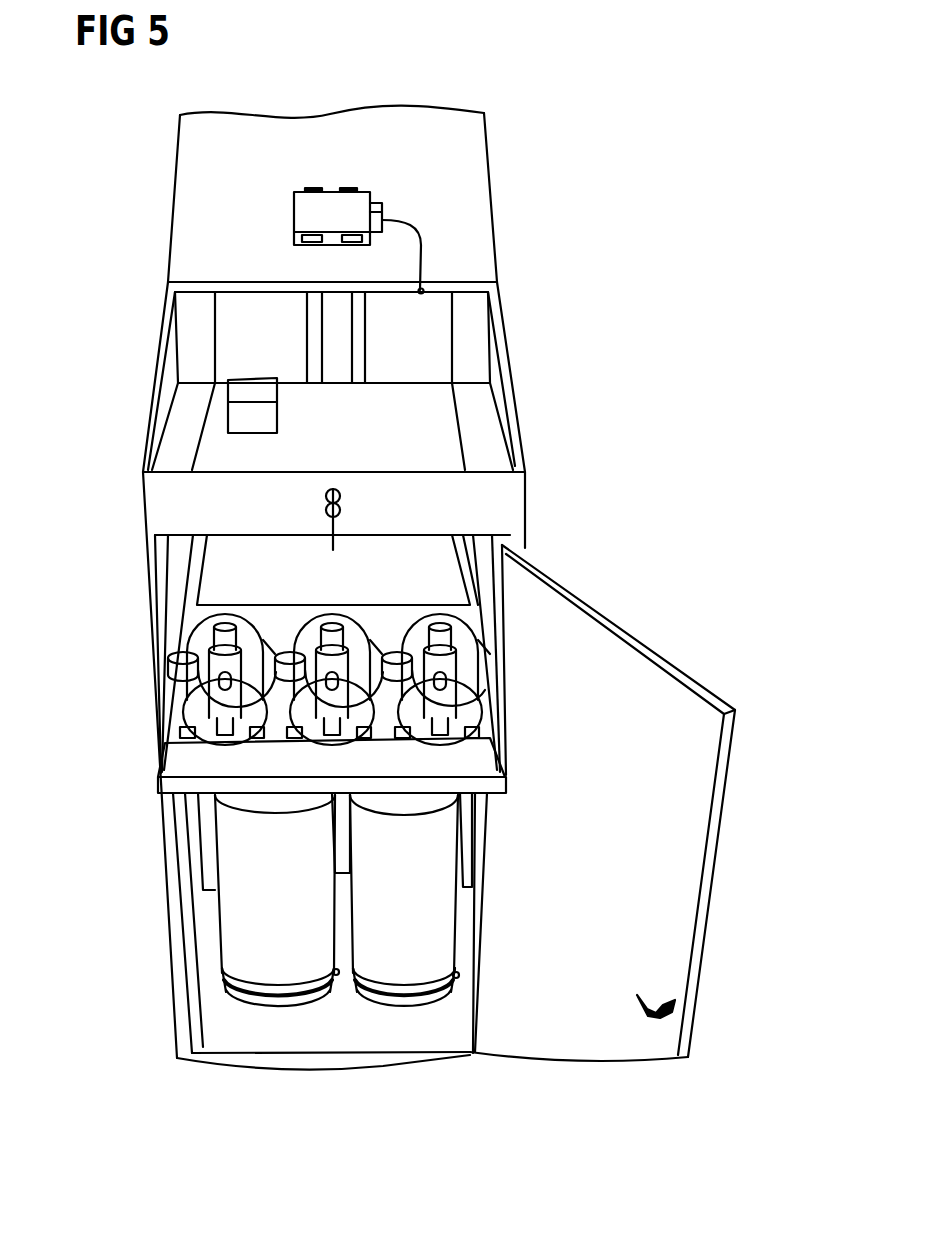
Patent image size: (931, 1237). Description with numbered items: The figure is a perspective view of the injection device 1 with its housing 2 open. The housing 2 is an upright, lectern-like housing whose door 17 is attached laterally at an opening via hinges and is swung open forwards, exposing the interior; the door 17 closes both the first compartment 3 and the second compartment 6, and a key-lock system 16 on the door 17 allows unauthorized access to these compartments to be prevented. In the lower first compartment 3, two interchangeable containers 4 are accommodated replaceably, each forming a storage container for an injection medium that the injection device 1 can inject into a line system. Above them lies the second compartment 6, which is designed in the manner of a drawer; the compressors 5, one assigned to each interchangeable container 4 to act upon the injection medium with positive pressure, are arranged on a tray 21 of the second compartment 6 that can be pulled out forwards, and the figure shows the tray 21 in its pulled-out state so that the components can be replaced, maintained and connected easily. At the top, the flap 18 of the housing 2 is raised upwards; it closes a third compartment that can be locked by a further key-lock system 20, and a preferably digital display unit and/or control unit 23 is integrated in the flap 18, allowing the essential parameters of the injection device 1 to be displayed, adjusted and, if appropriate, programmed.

The injection device 1 is at (592, 136).
The housing 2 is at (160, 673).
The first compartment 3 is at (205, 952).
The interchangeable container 4 is at (275, 965).
The compressor 5 is at (465, 668).
The second compartment 6 is at (180, 592).
The key-lock system 16 is at (675, 1000).
The door 17 is at (690, 805).
The flap 18 is at (467, 205).
The further key-lock system 20 is at (345, 503).
The tray 21 is at (170, 787).
The display unit and/or control unit 23 is at (305, 208).